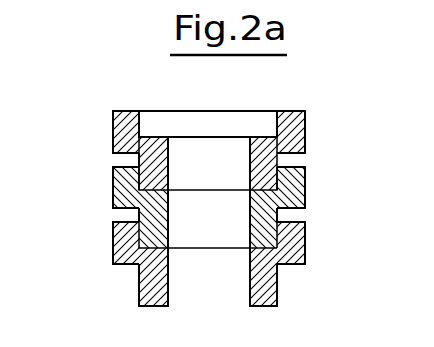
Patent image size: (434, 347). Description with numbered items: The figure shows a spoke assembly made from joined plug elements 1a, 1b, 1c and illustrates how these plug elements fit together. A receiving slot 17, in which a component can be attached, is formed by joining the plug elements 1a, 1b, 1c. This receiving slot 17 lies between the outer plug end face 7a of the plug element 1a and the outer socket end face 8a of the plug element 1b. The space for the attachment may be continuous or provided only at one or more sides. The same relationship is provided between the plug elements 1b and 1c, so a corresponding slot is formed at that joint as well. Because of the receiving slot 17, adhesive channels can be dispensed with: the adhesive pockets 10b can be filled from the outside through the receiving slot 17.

The outer socket end face 8a is at (292, 111).
The plug element 1a is at (306, 136).
The plug element 1b is at (306, 191).
The plug element 1c is at (306, 245).
The outer plug end face 7a is at (293, 265).
The receiving slot 17 is at (122, 160).
The adhesive pocket 10b is at (122, 235).